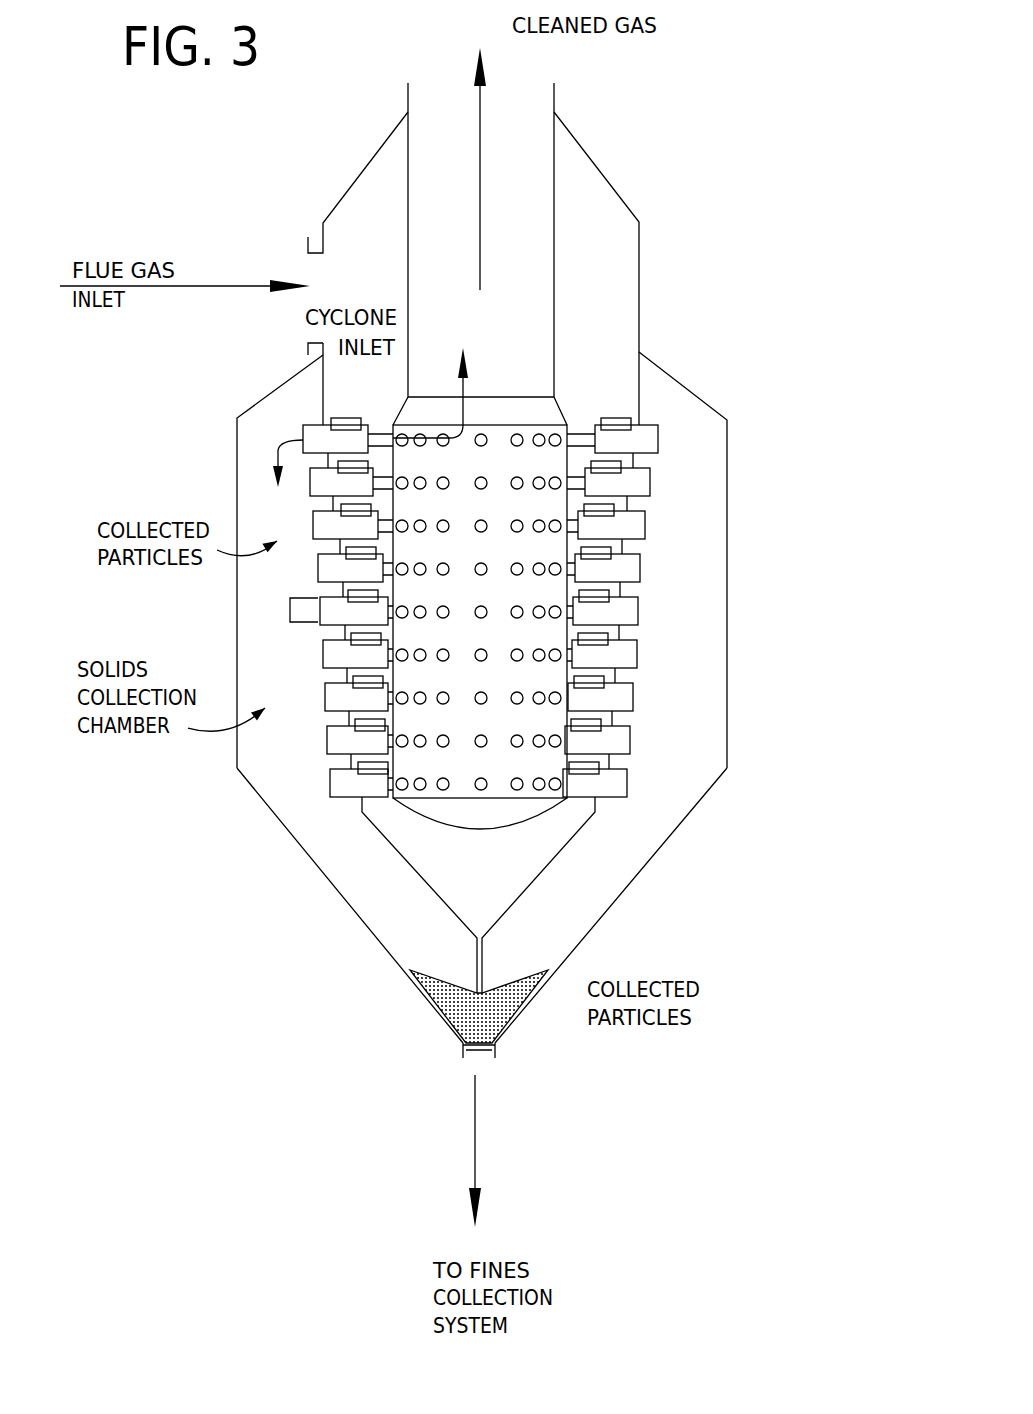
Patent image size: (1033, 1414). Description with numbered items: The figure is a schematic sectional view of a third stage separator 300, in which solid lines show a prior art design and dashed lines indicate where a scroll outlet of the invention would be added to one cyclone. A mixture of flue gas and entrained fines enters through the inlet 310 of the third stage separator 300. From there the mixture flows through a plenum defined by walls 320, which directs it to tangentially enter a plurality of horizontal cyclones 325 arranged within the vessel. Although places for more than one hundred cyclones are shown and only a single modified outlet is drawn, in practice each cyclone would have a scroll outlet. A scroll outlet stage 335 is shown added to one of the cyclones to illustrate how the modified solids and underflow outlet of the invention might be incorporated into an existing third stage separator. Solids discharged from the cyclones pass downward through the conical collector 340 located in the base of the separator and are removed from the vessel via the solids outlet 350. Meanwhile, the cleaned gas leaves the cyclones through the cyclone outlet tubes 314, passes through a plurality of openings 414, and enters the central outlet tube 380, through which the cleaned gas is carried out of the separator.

The third stage separator 300 is at (728, 448).
The inlet 310 is at (308, 270).
The cyclone outlet tubes 314 is at (575, 427).
The walls 320 is at (639, 382).
The horizontal cyclones 325 is at (663, 448).
The scroll outlet stage 335 is at (290, 598).
The conical collector 340 is at (280, 828).
The solids outlet 350 is at (480, 1058).
The outlet tube 380 is at (554, 212).
The openings 414 is at (542, 523).